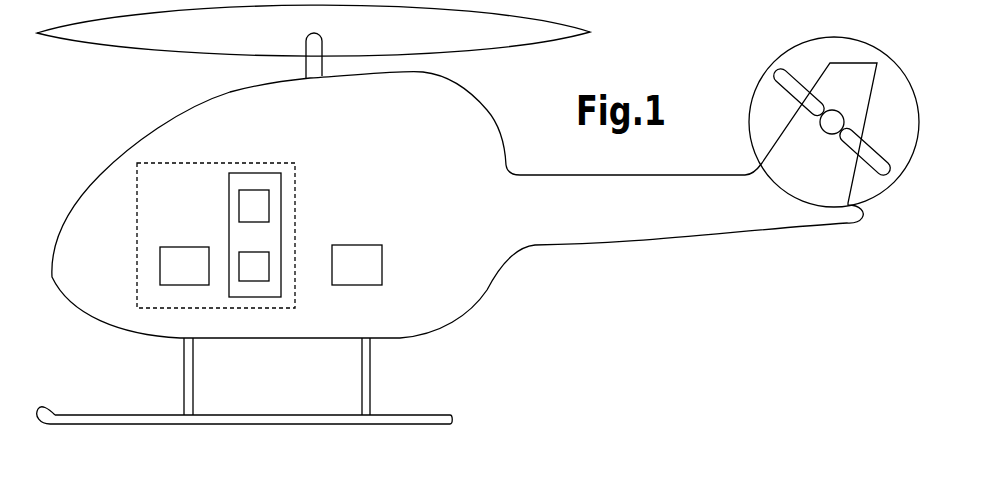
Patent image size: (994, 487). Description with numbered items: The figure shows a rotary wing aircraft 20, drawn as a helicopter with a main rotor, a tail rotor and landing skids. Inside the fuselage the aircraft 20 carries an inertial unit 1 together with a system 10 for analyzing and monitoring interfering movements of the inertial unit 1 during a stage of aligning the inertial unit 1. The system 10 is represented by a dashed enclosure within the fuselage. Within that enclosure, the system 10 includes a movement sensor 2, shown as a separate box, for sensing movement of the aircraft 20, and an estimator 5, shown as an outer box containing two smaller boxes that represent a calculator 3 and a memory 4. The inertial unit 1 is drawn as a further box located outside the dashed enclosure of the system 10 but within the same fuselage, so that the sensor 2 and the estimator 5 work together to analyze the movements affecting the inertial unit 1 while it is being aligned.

The inertial unit 1 is at (367, 245).
The movement sensor 2 is at (200, 247).
The calculator 3 is at (257, 282).
The memory 4 is at (260, 190).
The estimator 5 is at (281, 232).
The system for analyzing and monitoring interfering movements 10 is at (137, 220).
The rotary wing aircraft 20 is at (543, 318).